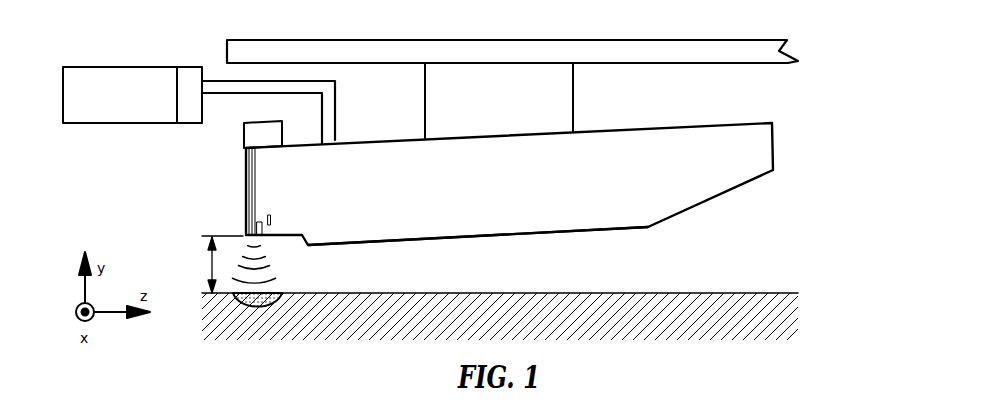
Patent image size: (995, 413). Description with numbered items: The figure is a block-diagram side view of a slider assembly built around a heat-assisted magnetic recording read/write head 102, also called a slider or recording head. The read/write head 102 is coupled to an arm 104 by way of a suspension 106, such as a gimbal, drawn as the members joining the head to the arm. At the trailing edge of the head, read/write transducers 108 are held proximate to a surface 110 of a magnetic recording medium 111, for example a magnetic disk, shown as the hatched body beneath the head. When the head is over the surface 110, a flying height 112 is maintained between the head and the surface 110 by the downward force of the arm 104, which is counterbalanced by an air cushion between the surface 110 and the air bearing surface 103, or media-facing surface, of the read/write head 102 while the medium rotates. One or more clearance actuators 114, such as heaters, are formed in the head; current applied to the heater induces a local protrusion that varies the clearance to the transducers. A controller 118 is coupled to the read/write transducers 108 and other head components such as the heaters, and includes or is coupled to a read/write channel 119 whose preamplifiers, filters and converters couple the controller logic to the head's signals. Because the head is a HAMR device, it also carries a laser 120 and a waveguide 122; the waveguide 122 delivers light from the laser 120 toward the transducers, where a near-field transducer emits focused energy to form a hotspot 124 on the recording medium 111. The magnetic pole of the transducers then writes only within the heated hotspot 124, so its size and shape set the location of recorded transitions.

The read/write head 102 is at (683, 128).
The air bearing surface 103 is at (388, 242).
The arm 104 is at (727, 47).
The suspension 106 is at (573, 95).
The read/write transducers 108 is at (258, 222).
The surface 110 is at (685, 293).
The magnetic recording medium 111 is at (698, 330).
The flying height 112 is at (209, 264).
The clearance actuator 114 is at (268, 215).
The controller 118 is at (115, 67).
The read/write channel 119 is at (185, 65).
The laser 120 is at (262, 132).
The waveguide 122 is at (247, 165).
The hotspot 124 is at (273, 298).